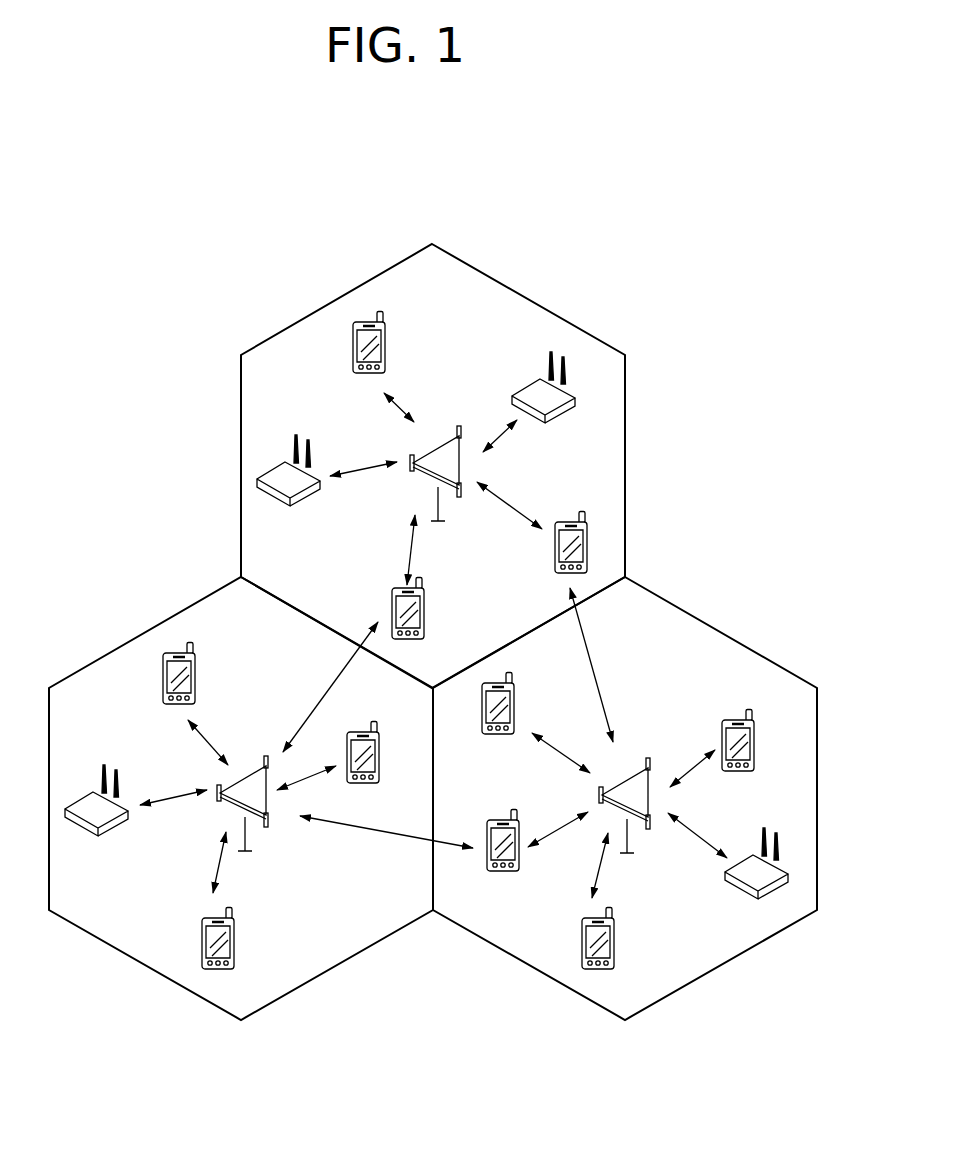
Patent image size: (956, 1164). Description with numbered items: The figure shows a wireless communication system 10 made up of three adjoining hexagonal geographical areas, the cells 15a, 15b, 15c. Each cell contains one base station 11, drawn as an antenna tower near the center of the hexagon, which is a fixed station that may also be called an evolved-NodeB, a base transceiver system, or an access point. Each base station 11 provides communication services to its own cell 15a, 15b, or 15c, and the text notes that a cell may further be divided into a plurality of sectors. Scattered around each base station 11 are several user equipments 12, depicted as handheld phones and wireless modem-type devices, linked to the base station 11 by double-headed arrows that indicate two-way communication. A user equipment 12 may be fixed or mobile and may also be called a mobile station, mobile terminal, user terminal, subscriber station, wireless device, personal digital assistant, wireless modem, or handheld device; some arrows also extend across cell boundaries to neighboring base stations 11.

The wireless communication system 10 is at (705, 361).
The base station 11 is at (446, 432).
The user equipment 12 is at (386, 349).
The cell 15a is at (626, 453).
The cell 15b is at (745, 642).
The cell 15c is at (120, 642).